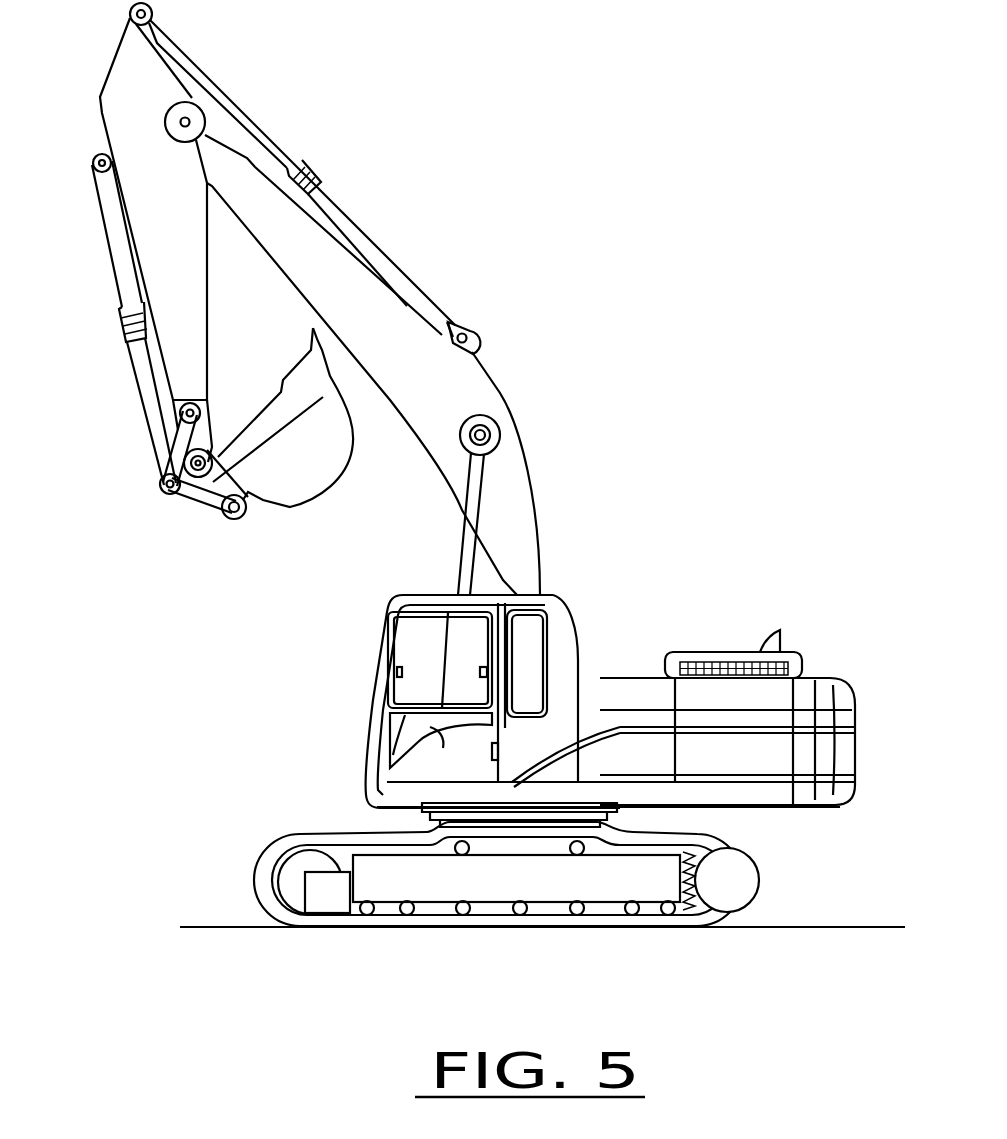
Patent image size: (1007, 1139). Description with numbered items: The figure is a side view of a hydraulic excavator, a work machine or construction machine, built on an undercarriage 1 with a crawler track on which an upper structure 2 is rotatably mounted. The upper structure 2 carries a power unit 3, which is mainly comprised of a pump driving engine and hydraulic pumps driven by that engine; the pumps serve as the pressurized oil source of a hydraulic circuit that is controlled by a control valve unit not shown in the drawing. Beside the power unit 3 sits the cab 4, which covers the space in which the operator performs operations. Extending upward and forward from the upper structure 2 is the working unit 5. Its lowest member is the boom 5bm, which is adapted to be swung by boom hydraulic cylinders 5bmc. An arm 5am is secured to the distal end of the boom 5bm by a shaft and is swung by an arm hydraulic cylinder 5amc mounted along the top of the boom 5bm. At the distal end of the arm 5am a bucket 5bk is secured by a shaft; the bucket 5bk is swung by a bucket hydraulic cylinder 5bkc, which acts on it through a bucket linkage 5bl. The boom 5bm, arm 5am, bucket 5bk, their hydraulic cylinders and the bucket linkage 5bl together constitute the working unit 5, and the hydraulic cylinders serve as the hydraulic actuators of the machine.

The undercarriage 1 is at (760, 913).
The upper structure 2 is at (763, 797).
The power unit 3 is at (780, 690).
The cab 4 is at (510, 597).
The working unit 5 is at (558, 456).
The arm 5am is at (125, 77).
The arm hydraulic cylinder 5amc is at (323, 188).
The bucket hydraulic cylinder 5bkc is at (113, 238).
The bucket linkage 5bl is at (190, 497).
The bucket 5bk is at (277, 500).
The boom 5bm is at (468, 388).
The boom hydraulic cylinder 5bmc is at (463, 500).